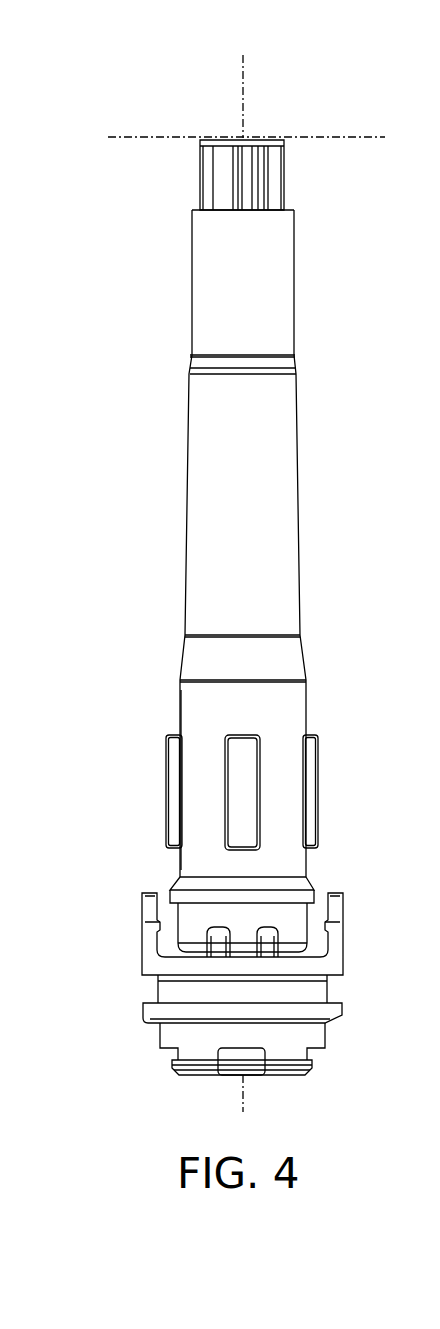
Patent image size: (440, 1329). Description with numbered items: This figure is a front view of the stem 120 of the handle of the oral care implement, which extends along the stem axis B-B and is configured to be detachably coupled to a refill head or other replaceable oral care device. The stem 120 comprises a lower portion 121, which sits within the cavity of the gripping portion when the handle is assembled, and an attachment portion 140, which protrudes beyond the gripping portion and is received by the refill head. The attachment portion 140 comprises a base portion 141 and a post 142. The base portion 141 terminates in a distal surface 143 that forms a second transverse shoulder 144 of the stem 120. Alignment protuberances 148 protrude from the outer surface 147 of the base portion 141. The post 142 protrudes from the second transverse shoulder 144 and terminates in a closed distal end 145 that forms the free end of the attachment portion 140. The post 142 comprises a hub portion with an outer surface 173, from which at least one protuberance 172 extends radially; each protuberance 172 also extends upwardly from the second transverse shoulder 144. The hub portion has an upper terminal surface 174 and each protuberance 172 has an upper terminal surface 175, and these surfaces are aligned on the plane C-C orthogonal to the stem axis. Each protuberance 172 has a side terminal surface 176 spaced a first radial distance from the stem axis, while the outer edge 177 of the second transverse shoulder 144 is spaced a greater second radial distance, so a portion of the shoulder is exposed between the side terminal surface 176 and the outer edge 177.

The stem 120 is at (80, 105).
The lower portion 121 is at (150, 990).
The attachment portion 140 is at (167, 569).
The base portion 141 is at (203, 790).
The post 142 is at (192, 180).
The distal surface 143 is at (293, 200).
The second transverse shoulder 144 is at (193, 200).
The closed distal end 145 is at (262, 152).
The outer surface 147 is at (205, 708).
The alignment protuberances 148 is at (316, 792).
The protuberance 172 is at (239, 152).
The outer surface of the hub portion 173 is at (268, 152).
The upper terminal surface of the hub portion 174 is at (215, 137).
The upper terminal surface of the protuberance 175 is at (258, 158).
The side terminal surface 176 is at (283, 175).
The outer edge 177 is at (297, 220).